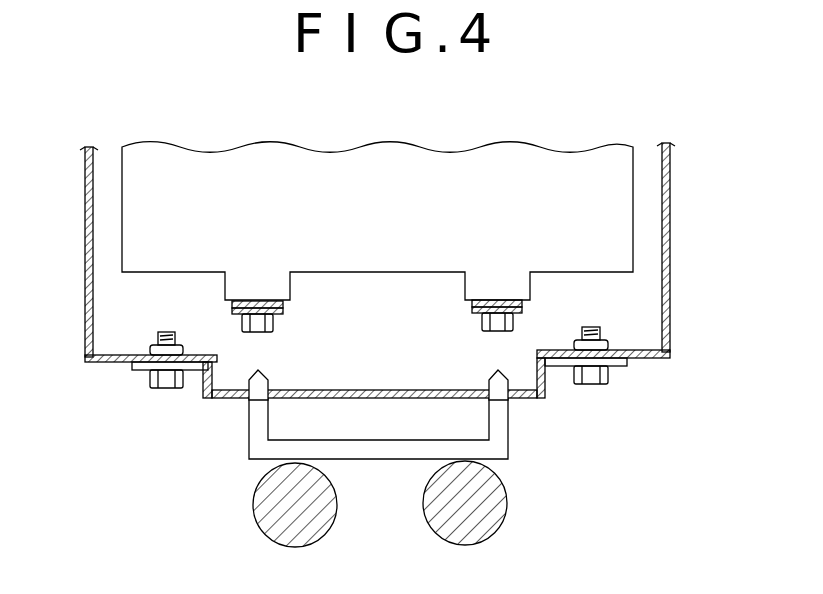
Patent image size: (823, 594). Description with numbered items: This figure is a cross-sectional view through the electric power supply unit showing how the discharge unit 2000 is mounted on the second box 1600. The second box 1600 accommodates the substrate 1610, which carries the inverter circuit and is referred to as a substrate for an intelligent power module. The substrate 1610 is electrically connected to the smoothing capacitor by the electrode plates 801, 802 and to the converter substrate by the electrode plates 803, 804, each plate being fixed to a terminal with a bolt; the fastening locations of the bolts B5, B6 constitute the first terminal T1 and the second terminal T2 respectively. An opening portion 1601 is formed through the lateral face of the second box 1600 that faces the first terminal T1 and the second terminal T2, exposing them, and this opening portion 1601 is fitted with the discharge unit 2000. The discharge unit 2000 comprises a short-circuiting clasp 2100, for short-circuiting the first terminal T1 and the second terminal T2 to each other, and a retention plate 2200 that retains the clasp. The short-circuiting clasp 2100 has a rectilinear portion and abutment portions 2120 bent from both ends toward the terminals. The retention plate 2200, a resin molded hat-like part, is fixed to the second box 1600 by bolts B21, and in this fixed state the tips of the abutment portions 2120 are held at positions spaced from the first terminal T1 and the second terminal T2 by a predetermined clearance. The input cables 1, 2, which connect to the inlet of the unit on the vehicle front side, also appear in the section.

The second box 1600 is at (670, 170).
The opening portion 1601 is at (545, 395).
The substrate 1610 is at (617, 231).
The electrode plate 801 is at (232, 312).
The electrode plate 802 is at (523, 312).
The electrode plate 803 is at (232, 304).
The electrode plate 804 is at (525, 301).
The bolt B5 is at (240, 322).
The bolt B6 is at (515, 318).
The first terminal T1 is at (282, 322).
The second terminal T2 is at (475, 321).
The bolt B21 is at (610, 373).
The short-circuiting clasp 2100 is at (503, 448).
The abutment portion 2120 is at (247, 422).
The retention plate 2200 is at (525, 398).
The input cable 1 is at (270, 507).
The input cable 2 is at (480, 503).
The discharge unit 2000 is at (563, 492).